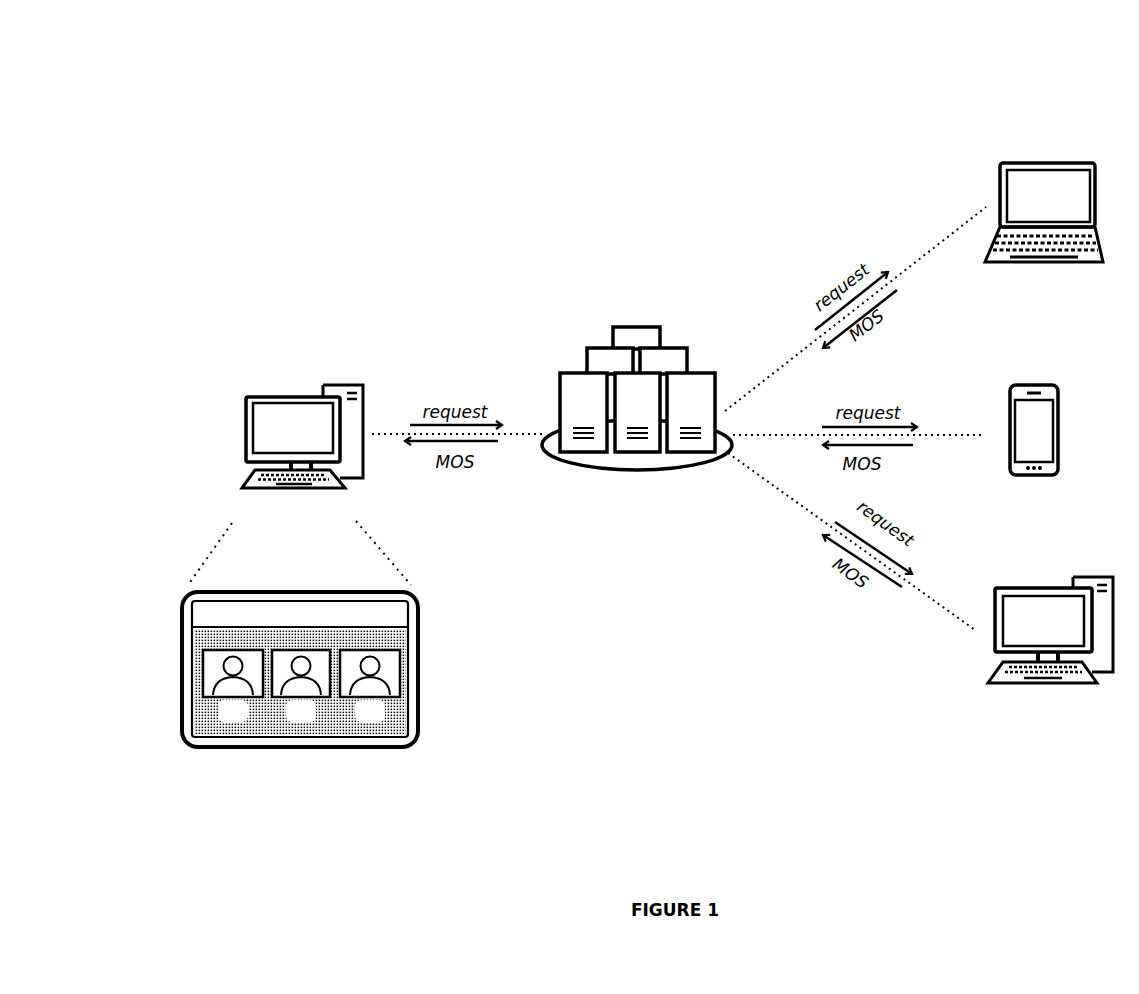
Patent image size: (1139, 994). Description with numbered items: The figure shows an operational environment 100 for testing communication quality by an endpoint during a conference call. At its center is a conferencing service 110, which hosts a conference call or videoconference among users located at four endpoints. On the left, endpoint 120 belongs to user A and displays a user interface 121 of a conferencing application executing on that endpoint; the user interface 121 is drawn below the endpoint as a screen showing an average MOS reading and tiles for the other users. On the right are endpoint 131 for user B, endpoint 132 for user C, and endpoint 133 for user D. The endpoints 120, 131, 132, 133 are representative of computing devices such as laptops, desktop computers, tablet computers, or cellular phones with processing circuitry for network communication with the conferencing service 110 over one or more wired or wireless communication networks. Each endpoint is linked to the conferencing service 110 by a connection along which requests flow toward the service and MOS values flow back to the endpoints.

The operational environment 100 is at (85, 90).
The conferencing service 110 is at (637, 417).
The endpoint 120 is at (302, 453).
The user interface 121 is at (240, 748).
The endpoint 131 is at (1044, 229).
The endpoint 132 is at (1059, 452).
The endpoint 133 is at (1050, 646).